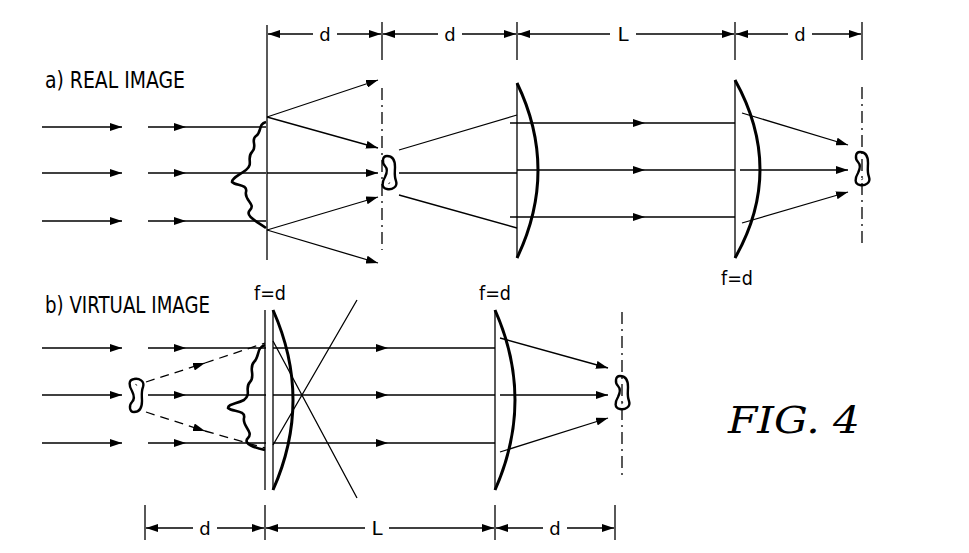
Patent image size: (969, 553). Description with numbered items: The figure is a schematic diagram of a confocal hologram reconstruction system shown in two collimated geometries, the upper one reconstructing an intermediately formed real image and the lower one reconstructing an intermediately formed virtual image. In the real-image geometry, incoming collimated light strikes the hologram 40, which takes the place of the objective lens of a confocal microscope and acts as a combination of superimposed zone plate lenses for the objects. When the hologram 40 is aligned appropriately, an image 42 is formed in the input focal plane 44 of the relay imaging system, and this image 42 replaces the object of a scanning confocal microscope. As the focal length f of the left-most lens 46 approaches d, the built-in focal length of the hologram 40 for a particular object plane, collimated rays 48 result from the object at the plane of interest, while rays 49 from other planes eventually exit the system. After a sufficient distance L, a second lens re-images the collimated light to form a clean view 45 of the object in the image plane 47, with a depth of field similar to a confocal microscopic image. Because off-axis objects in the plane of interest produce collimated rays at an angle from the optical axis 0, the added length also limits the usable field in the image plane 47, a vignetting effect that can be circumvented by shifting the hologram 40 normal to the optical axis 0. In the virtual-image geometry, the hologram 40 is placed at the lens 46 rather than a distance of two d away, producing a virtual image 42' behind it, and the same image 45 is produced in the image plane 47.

The hologram 40 is at (268, 140).
The rays from other planes 49 is at (298, 105).
The image 42 is at (397, 169).
The input focal plane 44 is at (458, 132).
The left-most lens 46 is at (528, 228).
The collimated rays 48 is at (670, 121).
The optical axis 0 is at (769, 167).
The clean view of the object 45 is at (872, 152).
The image plane 47 is at (863, 238).
The virtual image 42' is at (168, 395).